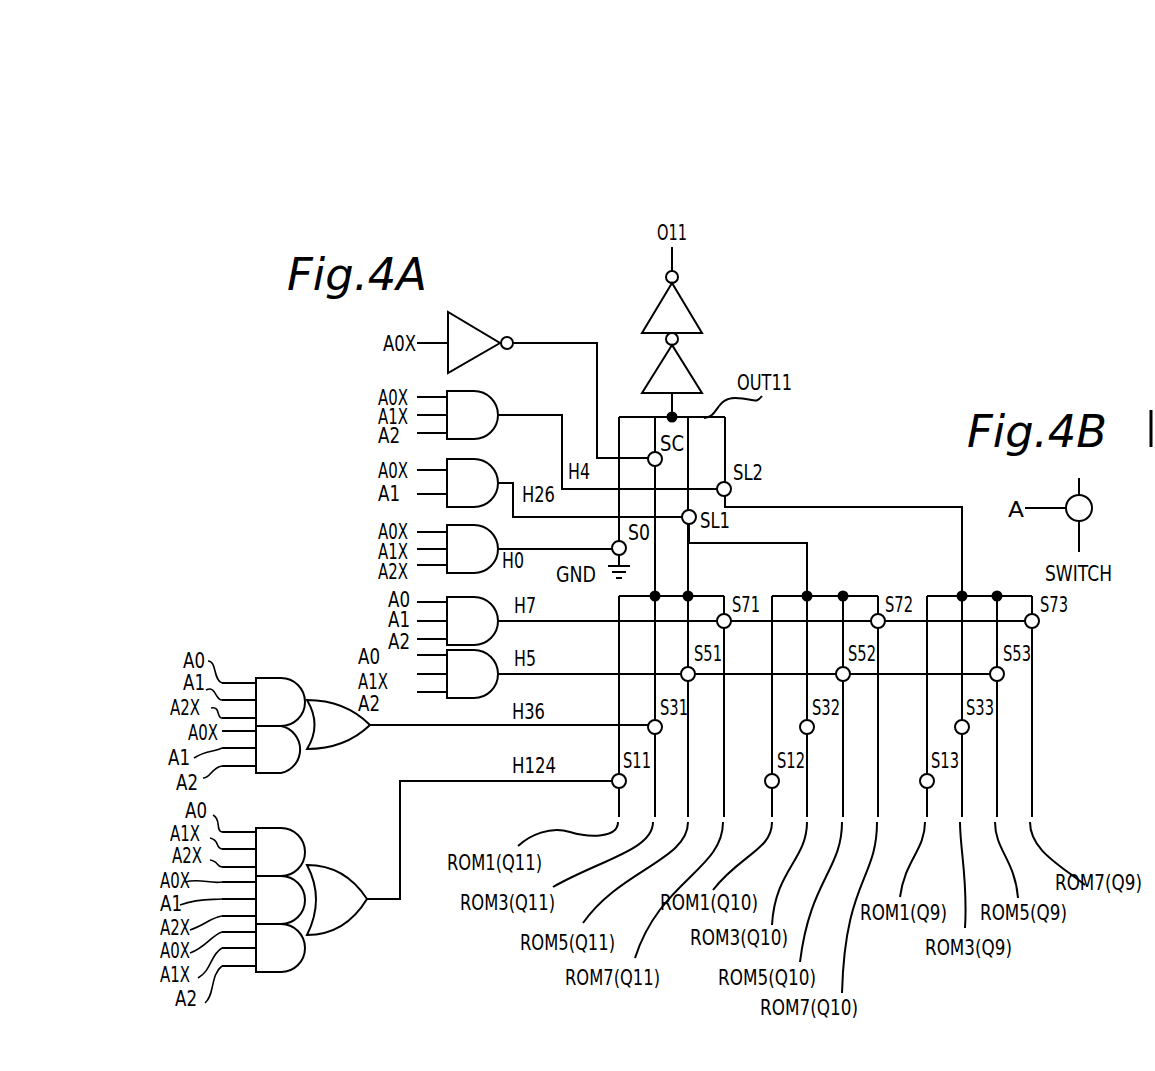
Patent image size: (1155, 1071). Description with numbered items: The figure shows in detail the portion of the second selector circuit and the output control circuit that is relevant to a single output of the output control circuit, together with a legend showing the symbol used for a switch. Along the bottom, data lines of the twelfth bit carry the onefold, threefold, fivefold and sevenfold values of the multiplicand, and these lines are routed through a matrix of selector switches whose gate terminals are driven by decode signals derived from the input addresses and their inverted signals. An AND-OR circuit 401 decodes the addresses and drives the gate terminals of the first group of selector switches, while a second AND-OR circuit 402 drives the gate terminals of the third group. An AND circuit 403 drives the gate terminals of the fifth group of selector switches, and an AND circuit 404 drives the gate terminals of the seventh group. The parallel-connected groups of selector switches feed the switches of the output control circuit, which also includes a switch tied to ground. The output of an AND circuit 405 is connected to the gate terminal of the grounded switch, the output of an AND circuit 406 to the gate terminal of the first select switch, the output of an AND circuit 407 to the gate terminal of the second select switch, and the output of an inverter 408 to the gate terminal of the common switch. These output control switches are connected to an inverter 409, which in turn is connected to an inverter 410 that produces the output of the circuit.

The AND-OR circuit 401 is at (417, 876).
The AND-OR circuit 402 is at (435, 725).
The AND circuit 403 is at (707, 674).
The AND circuit 404 is at (724, 621).
The AND circuit 405 is at (514, 549).
The AND circuit 406 is at (549, 488).
The AND circuit 407 is at (567, 440).
The inverter 408 is at (532, 385).
The inverter 409 is at (672, 364).
The inverter 410 is at (672, 303).